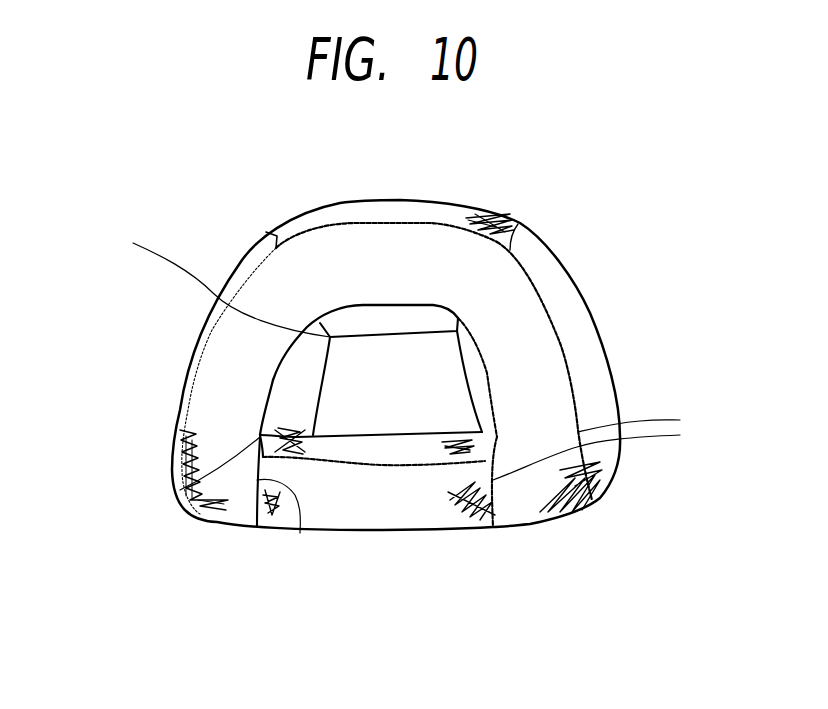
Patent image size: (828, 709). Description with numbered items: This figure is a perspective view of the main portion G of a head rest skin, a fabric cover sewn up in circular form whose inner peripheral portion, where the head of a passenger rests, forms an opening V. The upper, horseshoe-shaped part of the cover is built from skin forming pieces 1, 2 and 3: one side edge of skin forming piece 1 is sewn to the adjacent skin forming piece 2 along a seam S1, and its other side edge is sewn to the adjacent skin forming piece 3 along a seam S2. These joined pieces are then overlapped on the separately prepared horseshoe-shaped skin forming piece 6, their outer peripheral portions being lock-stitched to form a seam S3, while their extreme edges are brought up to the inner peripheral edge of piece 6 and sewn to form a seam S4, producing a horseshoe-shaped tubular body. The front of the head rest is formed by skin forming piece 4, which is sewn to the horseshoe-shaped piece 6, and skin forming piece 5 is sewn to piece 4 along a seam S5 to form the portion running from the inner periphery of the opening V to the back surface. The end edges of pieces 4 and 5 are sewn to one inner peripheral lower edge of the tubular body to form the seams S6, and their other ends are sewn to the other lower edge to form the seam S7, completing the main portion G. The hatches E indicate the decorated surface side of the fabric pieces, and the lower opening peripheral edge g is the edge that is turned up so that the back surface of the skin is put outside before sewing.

The skin forming piece 1 is at (420, 201).
The skin forming piece 2 is at (236, 268).
The skin forming piece 3 is at (480, 363).
The skin forming piece 4 is at (358, 517).
The skin forming piece 5 is at (422, 452).
The horseshoe-shaped skin forming piece 6 is at (213, 358).
The hatches E is at (492, 232).
The main portion G is at (563, 258).
The opening V is at (378, 371).
The lower opening peripheral edge g is at (223, 527).
The seam S1 is at (267, 232).
The seam S2 is at (520, 224).
The seam S3 is at (575, 383).
The seam S4 is at (180, 490).
The seam S5 is at (387, 465).
The seams S6 is at (680, 420).
The seam S7 is at (320, 487).